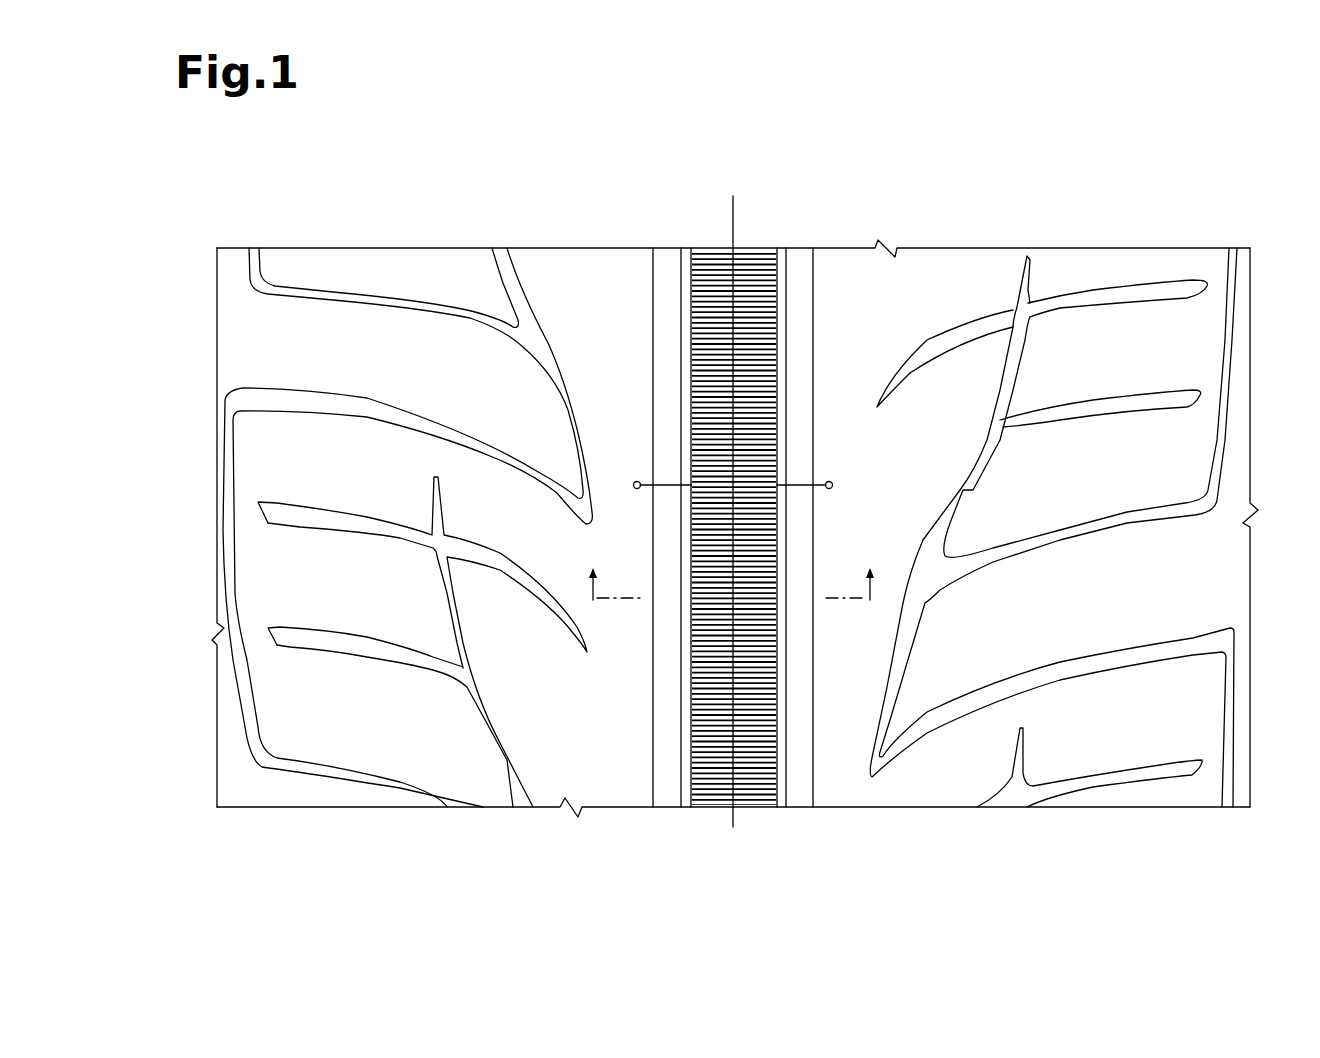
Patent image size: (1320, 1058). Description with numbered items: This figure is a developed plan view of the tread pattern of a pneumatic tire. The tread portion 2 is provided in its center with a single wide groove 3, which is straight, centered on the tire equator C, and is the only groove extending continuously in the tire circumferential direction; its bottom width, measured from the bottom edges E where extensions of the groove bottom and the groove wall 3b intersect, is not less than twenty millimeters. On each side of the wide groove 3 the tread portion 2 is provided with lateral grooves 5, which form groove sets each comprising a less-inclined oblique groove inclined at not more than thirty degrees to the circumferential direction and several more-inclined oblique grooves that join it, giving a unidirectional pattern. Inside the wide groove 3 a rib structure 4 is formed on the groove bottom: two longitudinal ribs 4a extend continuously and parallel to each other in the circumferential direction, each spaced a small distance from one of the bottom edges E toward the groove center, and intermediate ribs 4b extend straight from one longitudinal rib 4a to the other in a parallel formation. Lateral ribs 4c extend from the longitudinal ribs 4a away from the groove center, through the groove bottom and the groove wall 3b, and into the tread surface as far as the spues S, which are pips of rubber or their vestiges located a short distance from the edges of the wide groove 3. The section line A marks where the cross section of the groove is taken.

The tread portion 2 is at (949, 218).
The wide groove 3 is at (762, 222).
The groove wall 3b is at (665, 255).
The ribs 4 is at (710, 527).
The longitudinal rib 4a is at (690, 748).
The intermediate rib 4b is at (758, 773).
The lateral rib 4c is at (667, 483).
The lateral groove 5 is at (417, 302).
The tire equator C is at (718, 492).
The spue S is at (634, 482).
The bottom edge E is at (683, 677).
The section line A- A is at (732, 586).